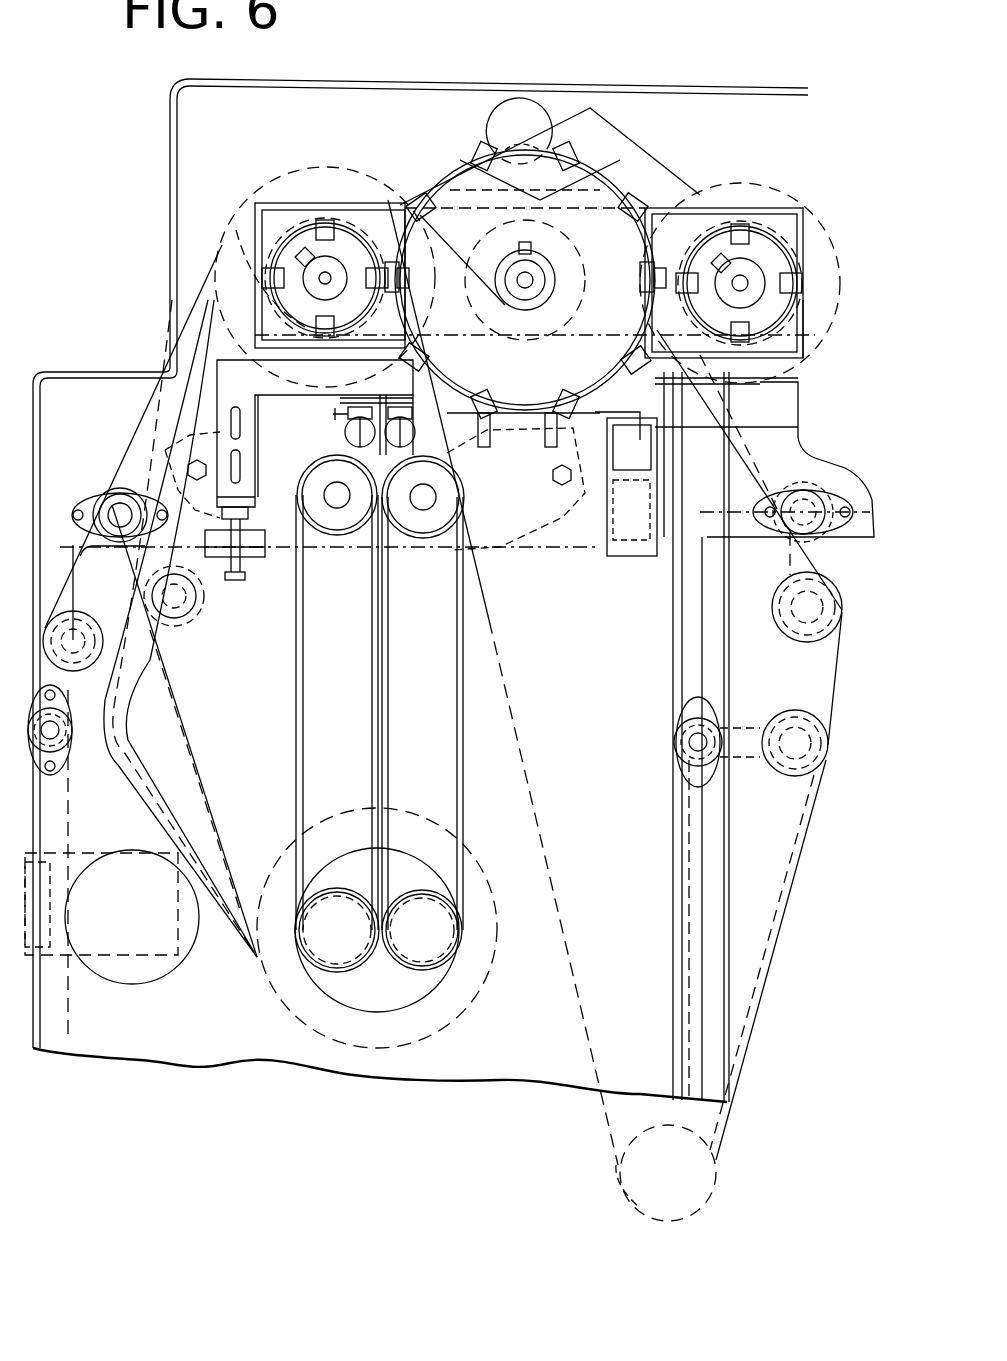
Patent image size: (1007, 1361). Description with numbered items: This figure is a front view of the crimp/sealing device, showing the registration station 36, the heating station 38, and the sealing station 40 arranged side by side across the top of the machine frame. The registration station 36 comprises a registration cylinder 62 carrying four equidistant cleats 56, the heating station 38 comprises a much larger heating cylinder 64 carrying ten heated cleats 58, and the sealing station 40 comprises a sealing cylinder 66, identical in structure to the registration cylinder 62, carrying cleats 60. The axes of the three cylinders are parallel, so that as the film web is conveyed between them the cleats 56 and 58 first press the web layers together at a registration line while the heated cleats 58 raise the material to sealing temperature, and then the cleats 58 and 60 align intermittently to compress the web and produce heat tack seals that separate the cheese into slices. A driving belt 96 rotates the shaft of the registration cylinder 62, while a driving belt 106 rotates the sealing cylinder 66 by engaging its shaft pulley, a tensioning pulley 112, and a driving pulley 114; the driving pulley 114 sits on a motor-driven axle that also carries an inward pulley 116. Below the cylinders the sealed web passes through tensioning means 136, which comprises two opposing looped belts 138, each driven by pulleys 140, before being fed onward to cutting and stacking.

The registration station 36 is at (808, 262).
The heating station 38 is at (605, 195).
The sealing station 40 is at (222, 232).
The cleats 56 is at (685, 260).
The cleats 58 is at (400, 270).
The cleats 60 is at (270, 292).
The registration cylinder 62 is at (760, 255).
The heating cylinder 64 is at (540, 148).
The sealing cylinder 66 is at (325, 232).
The driving belt 96 is at (432, 175).
The driving belt 106 is at (175, 405).
The tensioning pulley 112 is at (185, 600).
The driving pulley 114 is at (295, 975).
The inward pulley 116 is at (345, 945).
The tensioning means 136 is at (435, 678).
The looped belts 138 is at (460, 610).
The pulleys 140 is at (345, 535).